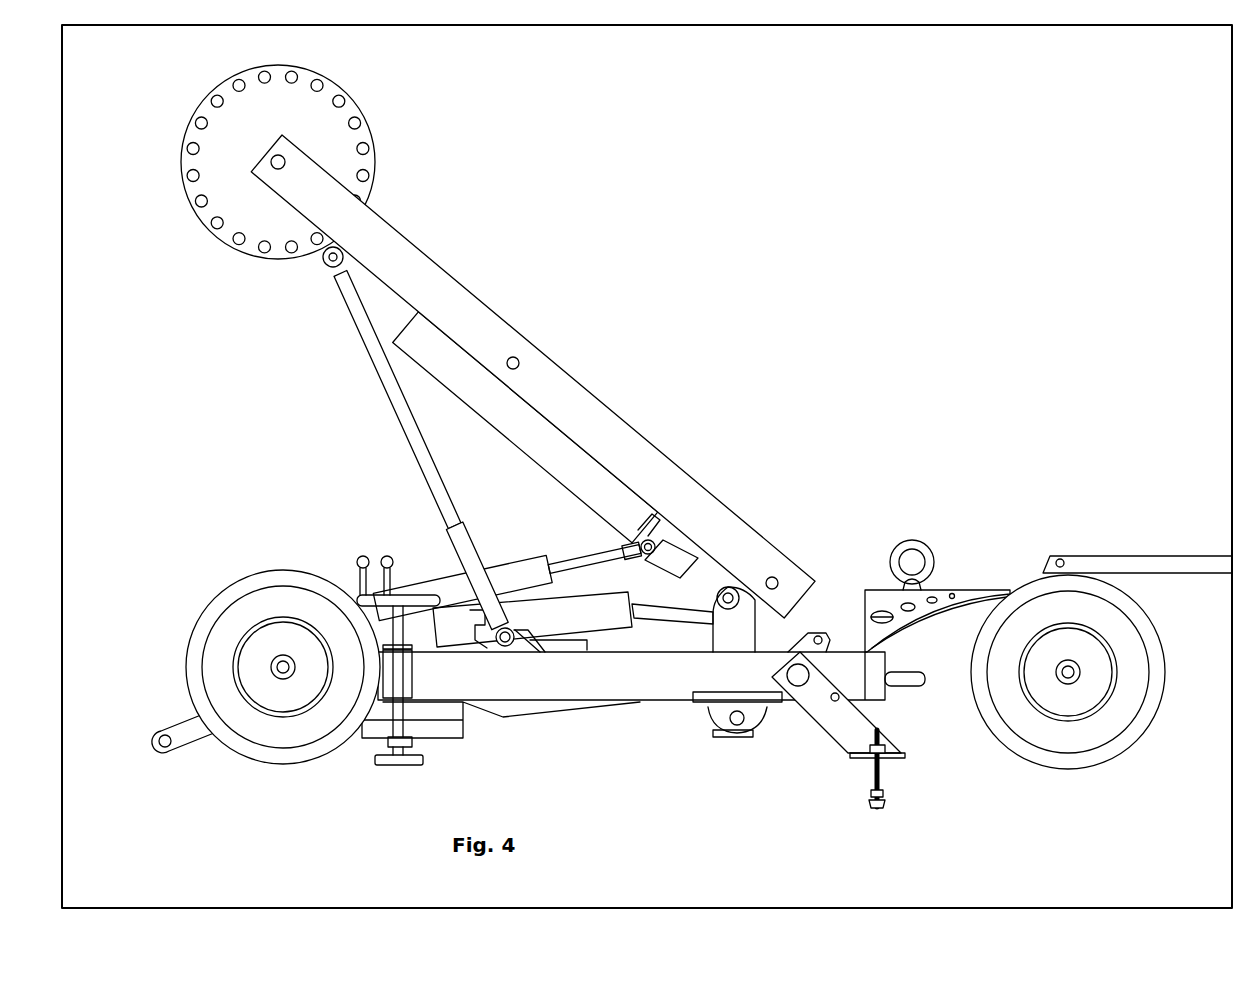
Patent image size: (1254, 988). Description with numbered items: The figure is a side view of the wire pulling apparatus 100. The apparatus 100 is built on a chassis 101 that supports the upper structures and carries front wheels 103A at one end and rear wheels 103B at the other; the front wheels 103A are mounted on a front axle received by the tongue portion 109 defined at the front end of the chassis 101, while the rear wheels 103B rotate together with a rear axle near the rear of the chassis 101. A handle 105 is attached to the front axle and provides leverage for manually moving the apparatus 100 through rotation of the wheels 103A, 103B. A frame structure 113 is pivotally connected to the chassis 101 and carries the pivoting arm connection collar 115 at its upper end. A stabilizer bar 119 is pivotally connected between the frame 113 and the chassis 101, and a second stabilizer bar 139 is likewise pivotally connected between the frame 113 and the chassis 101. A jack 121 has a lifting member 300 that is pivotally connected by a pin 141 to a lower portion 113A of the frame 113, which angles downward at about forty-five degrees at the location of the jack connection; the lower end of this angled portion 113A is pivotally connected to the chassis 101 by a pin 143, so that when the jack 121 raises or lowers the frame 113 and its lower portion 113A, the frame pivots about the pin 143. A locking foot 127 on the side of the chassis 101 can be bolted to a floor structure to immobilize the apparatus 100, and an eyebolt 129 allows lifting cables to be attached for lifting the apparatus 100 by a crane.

The wire pulling apparatus 100 is at (906, 346).
The chassis 101 is at (652, 688).
The front wheels 103A is at (1115, 740).
The rear wheels 103B is at (238, 588).
The handle 105 is at (1133, 563).
The tongue portion 109 is at (947, 597).
The frame structure 113 is at (550, 380).
The lower portion of the frame 113A is at (572, 472).
The pivoting arm connection collar 115 is at (247, 108).
The stabilizer bar 119 is at (383, 374).
The jack 121 is at (573, 620).
The locking foot 127 is at (848, 733).
The eyebolt 129 is at (913, 543).
The second stabilizer bar 139 is at (433, 582).
The pin 141 is at (735, 588).
The pin 143 is at (737, 728).
The lifting member 300 is at (683, 605).